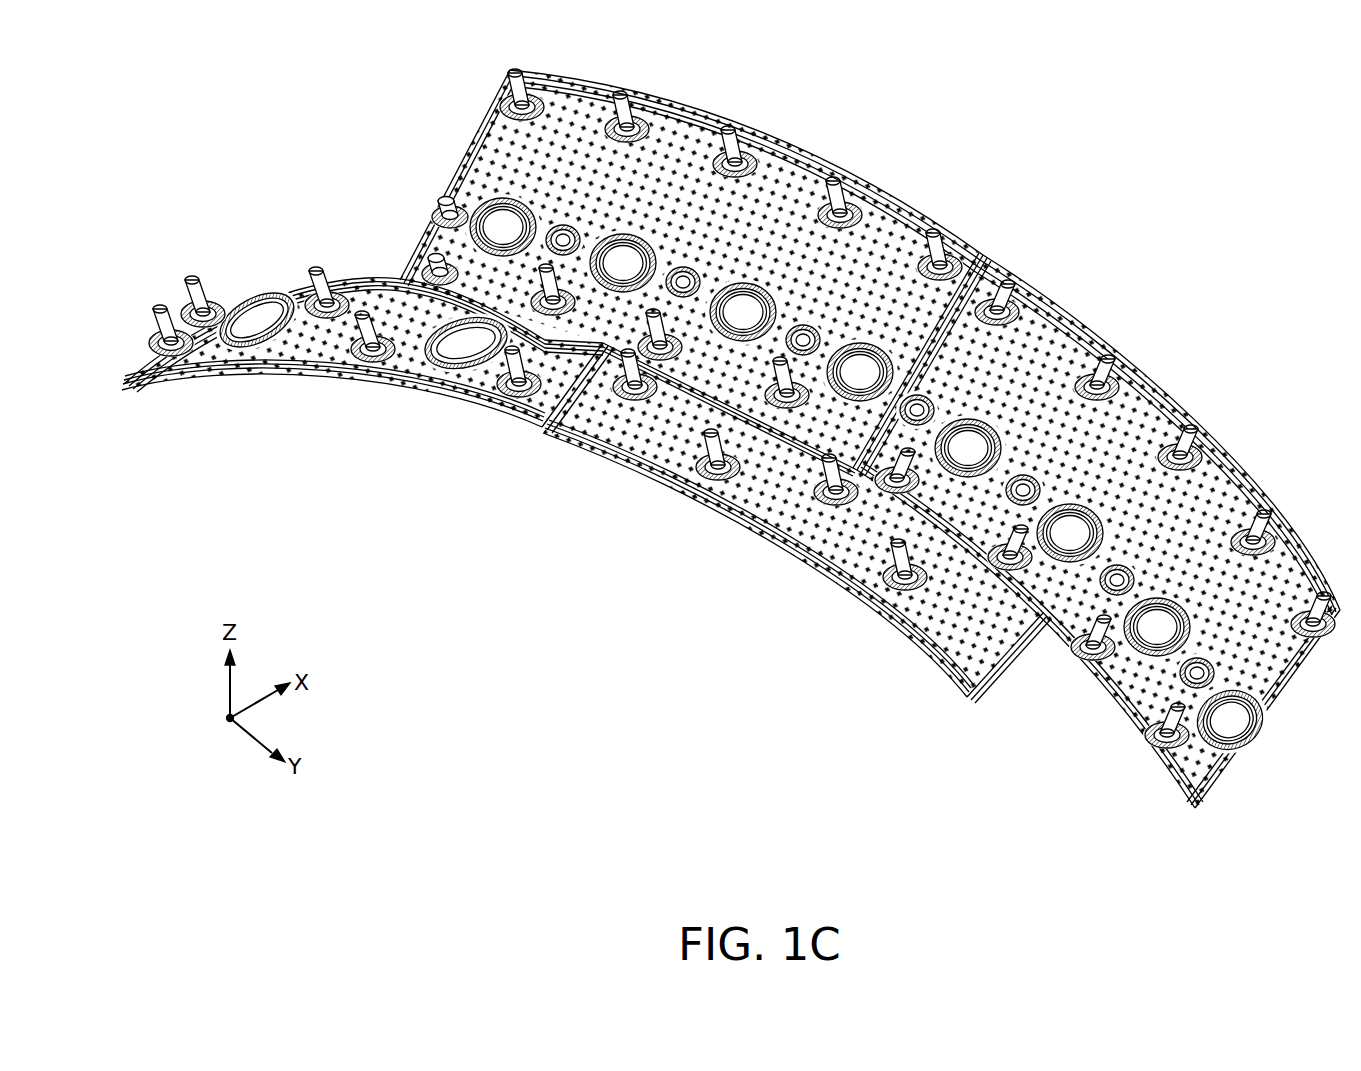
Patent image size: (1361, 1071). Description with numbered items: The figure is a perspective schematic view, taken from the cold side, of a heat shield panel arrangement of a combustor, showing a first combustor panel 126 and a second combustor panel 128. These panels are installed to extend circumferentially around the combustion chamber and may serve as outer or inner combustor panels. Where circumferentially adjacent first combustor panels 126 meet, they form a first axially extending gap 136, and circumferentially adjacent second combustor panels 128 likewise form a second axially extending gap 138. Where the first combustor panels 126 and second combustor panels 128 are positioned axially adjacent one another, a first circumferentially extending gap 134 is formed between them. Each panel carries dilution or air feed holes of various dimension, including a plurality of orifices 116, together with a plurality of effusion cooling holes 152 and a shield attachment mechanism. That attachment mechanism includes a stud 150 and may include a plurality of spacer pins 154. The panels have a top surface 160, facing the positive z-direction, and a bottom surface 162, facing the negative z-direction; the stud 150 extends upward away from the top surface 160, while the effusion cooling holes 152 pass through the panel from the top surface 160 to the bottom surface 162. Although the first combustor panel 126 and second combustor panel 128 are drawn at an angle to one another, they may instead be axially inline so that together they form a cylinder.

The orifice 116 is at (1152, 640).
The first combustor panel 126 is at (293, 366).
The second combustor panel 128 is at (760, 140).
The first circumferentially extending gap 134 is at (395, 278).
The first axially extending gap 136 is at (544, 435).
The second axially extending gap 138 is at (988, 260).
The stud 150 is at (907, 575).
The effusion cooling hole 152 is at (972, 645).
The spacer pin 154 is at (905, 577).
The top surface 160 is at (888, 218).
The bottom surface 162 is at (1145, 742).